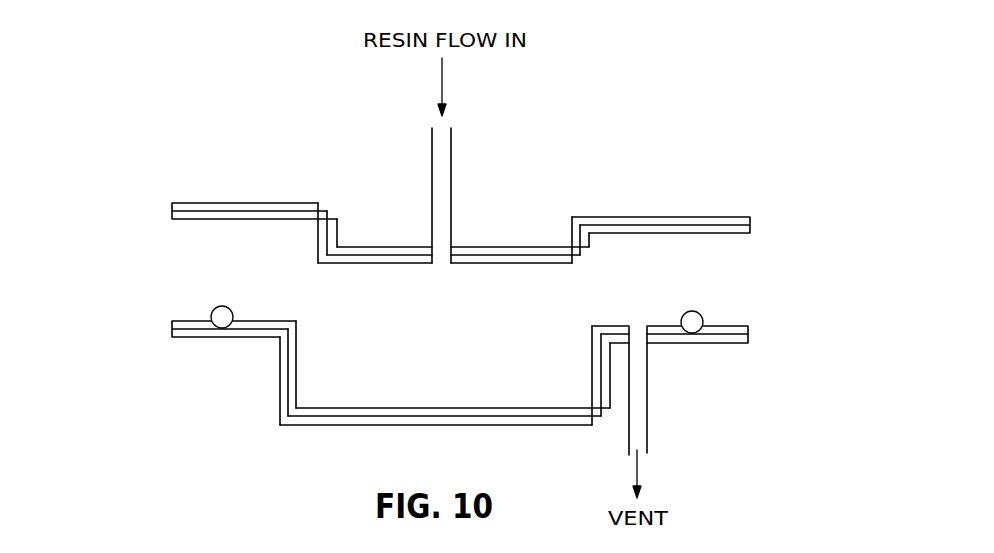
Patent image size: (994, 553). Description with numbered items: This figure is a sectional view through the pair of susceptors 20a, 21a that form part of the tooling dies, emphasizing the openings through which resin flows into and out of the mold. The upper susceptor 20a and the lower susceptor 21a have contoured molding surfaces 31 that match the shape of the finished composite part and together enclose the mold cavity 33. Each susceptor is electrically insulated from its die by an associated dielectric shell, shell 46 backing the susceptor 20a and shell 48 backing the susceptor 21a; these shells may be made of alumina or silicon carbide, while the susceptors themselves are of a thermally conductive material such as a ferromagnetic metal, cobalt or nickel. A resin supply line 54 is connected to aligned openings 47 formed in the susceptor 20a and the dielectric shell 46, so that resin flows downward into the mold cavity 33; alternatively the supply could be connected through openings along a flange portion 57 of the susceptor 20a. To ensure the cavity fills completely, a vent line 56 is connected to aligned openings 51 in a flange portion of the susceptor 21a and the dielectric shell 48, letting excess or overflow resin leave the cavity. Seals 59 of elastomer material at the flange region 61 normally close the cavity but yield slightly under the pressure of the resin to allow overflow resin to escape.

The susceptor 20a is at (446, 193).
The susceptor 21a is at (457, 351).
The contoured molding surfaces 31 is at (345, 281).
The mold cavity 33 is at (454, 383).
The dielectric shell 46 is at (320, 206).
The aligned openings 47 is at (442, 274).
The dielectric shell 48 is at (185, 334).
The aligned openings 51 is at (643, 314).
The resin supply line 54 is at (442, 158).
The vent line 56 is at (637, 430).
The flange portion 57 is at (252, 163).
The seal 59 is at (220, 313).
The vent region 61 is at (593, 305).